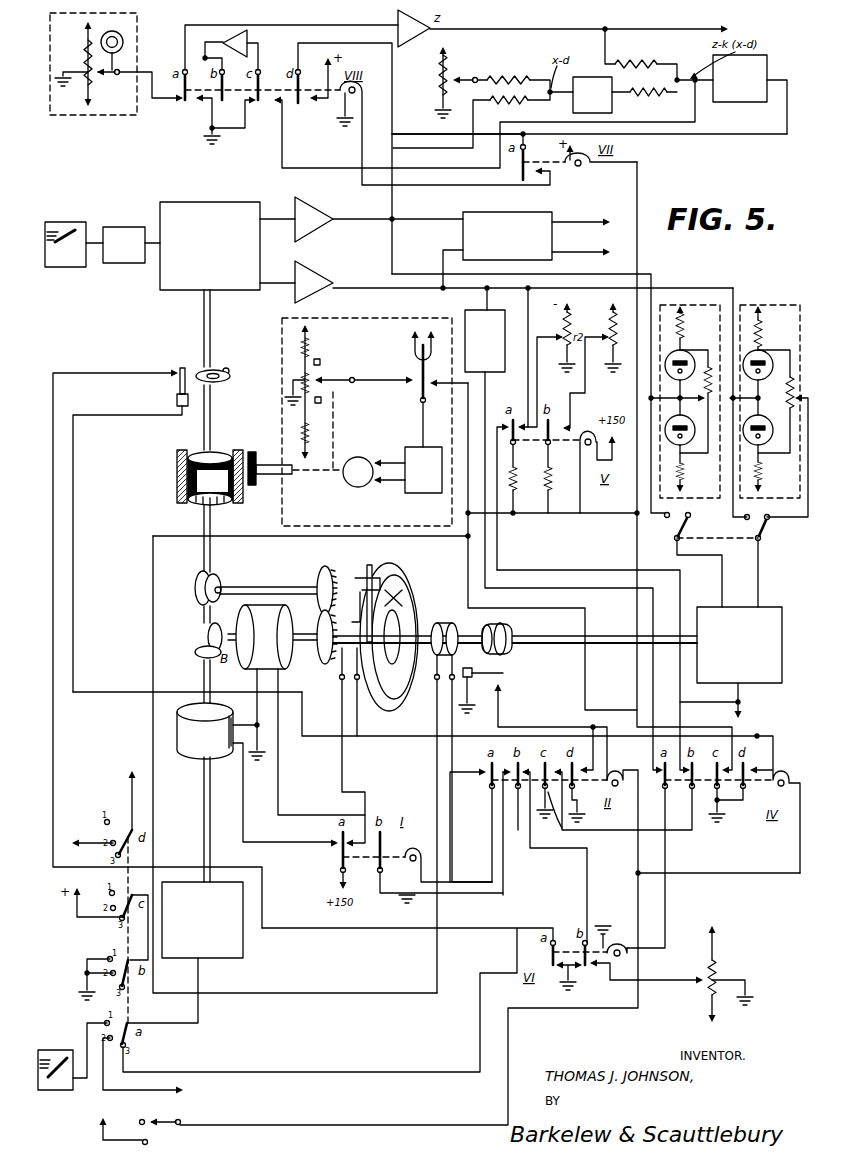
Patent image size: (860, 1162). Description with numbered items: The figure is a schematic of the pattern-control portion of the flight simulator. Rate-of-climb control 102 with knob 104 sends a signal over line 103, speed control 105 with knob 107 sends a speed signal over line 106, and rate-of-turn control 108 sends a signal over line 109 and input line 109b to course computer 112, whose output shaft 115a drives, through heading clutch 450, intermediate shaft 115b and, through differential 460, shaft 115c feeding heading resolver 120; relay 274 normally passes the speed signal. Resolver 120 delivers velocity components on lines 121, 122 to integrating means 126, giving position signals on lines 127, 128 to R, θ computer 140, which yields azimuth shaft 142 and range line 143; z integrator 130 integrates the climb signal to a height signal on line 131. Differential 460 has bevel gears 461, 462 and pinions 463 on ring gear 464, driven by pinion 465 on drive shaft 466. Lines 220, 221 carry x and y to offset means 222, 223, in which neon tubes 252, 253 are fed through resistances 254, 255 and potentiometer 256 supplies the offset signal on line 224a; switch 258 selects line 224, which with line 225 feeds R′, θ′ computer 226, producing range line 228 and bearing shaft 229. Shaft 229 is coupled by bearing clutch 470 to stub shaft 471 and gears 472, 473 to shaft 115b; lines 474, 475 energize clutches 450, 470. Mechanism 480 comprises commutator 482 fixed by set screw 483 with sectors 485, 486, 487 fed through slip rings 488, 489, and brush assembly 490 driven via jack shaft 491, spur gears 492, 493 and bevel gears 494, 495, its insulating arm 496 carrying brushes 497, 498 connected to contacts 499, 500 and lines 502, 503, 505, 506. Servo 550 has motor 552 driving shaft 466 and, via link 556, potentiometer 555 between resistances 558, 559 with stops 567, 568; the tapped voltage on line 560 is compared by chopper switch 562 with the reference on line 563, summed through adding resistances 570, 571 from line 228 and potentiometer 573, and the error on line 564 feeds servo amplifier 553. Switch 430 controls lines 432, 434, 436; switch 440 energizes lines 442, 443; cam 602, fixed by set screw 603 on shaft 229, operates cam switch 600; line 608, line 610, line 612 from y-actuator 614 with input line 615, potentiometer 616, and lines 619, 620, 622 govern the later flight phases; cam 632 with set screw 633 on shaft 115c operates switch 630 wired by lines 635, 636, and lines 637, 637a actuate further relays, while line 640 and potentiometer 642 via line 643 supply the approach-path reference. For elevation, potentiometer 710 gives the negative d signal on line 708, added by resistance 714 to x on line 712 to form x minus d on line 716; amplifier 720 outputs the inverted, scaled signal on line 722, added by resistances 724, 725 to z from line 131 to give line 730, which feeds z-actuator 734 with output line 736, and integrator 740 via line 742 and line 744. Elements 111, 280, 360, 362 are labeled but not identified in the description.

The rate-of-climb control 102 is at (118, 120).
The line 103 is at (155, 98).
The knob 104 is at (126, 36).
The speed control 105 is at (83, 218).
The line 106 is at (95, 248).
The knob 107 is at (88, 226).
The rate-of-turn control 108 is at (76, 1050).
The line 109 is at (87, 1085).
The line 109b is at (182, 1023).
The lead 111 is at (38, 1090).
The course computer 112 is at (243, 952).
The output shaft 115a is at (203, 840).
The intermediate shaft 115b is at (200, 619).
The heading shaft 115c is at (212, 330).
The heading resolver 120 is at (227, 200).
The line 121 is at (272, 217).
The line 122 is at (272, 281).
The integrating means 126 is at (330, 212).
The line 127 is at (372, 221).
The line 128 is at (370, 289).
The z integrator 130 is at (403, 44).
The line 131 is at (668, 31).
The R, θ computer 140 is at (520, 212).
The shaft 142 is at (586, 252).
The line 143 is at (590, 222).
The line 220 is at (636, 274).
The line 221 is at (566, 286).
The variable offset means 222 is at (714, 302).
The variable offset means 223 is at (788, 303).
The line 224 is at (705, 555).
The output line 224a is at (696, 530).
The line 225 is at (760, 565).
The R′, θ′ computer 226 is at (776, 606).
The line 228 is at (498, 540).
The θ′ shaft 229 is at (322, 650).
The voltage regulating neon tube 252 is at (672, 352).
The voltage regulating neon tube 253 is at (690, 440).
The resistance 254 is at (684, 332).
The resistance 255 is at (683, 470).
The potentiometer 256 is at (696, 401).
The switch 258 is at (678, 528).
The relay 274 is at (135, 227).
The lead 280 is at (146, 1090).
The lead 360 is at (89, 833).
The lead 362 is at (130, 803).
The main control switch 430 is at (144, 1041).
The line 432 is at (340, 1072).
The line 434 is at (150, 690).
The line 436 is at (435, 808).
The control switch 440 is at (164, 1130).
The line 442 is at (275, 1128).
The line 443 is at (760, 876).
The heading clutch 450 is at (204, 752).
The differential mechanism 460 is at (230, 446).
The bevel gear 461 is at (200, 506).
The bevel gear 462 is at (238, 454).
The bevel pinions 463 is at (243, 498).
The ring gear 464 is at (177, 470).
The pinion 465 is at (266, 465).
The differential drive shaft 466 is at (276, 475).
The bearing clutch 470 is at (272, 637).
The stub shaft 471 is at (269, 624).
The gear 472 is at (205, 637).
The gear 473 is at (200, 658).
The line 474 is at (292, 844).
The line 475 is at (322, 816).
The commutator mechanism 480 is at (420, 590).
The commutator 482 is at (417, 620).
The set screw 483 is at (426, 672).
The inner sector 485 is at (402, 580).
The inner sector 486 is at (377, 726).
The outer sector 487 is at (404, 598).
The slip ring 488 is at (458, 630).
The slip ring 489 is at (464, 822).
The brush assembly 490 is at (350, 560).
The jack shaft 491 is at (290, 587).
The spur gear 492 is at (330, 566).
The spur gear 493 is at (318, 628).
The bevel gear 494 is at (196, 580).
The bevel gear 495 is at (218, 596).
The radial arm 496 is at (370, 566).
The inner brush 497 is at (357, 614).
The outer brush 498 is at (356, 583).
The resilient contact 499 is at (341, 679).
The resilient contact 500 is at (355, 680).
The line 502 is at (341, 773).
The line 503 is at (485, 897).
The line 505 is at (428, 770).
The line 506 is at (458, 882).
The servo control 550 is at (393, 316).
The servo motor 552 is at (363, 457).
The servo amplifier 553 is at (394, 447).
The potentiometer 555 is at (348, 376).
The broken line 556 is at (335, 420).
The voltage dividing resistance 558 is at (312, 352).
The voltage dividing resistance 559 is at (318, 433).
The line 560 is at (374, 382).
The chopper switch 562 is at (420, 358).
The line 563 is at (448, 384).
The line 564 is at (424, 435).
The stop 567 is at (321, 361).
The stop 568 is at (322, 400).
The adding resistance 570 is at (516, 472).
The adding resistance 571 is at (551, 474).
The potentiometer 573 is at (574, 318).
The cam switch 600 is at (510, 668).
The cam 602 is at (514, 626).
The set screw 603 is at (505, 648).
The line 608 is at (587, 892).
The line 610 is at (668, 910).
The line 612 is at (488, 392).
The y-actuator 614 is at (470, 310).
The line 615 is at (492, 310).
The potentiometer 616 is at (700, 960).
The line 619 is at (550, 817).
The line 620 is at (630, 836).
The line 622 is at (468, 565).
The cam switch 630 is at (184, 366).
The cam 632 is at (230, 380).
The set screw 633 is at (228, 367).
The line 635 is at (152, 415).
The line 636 is at (53, 372).
The line 637 is at (634, 674).
The line 637a is at (638, 190).
The line 640 is at (530, 322).
The potentiometer 642 is at (630, 323).
The line 643 is at (587, 390).
The line 708 is at (478, 76).
The potentiometer 710 is at (440, 82).
The line 712 is at (473, 138).
The resistance 714 is at (522, 76).
The line 716 is at (550, 100).
The amplifier 720 is at (590, 77).
The line 722 is at (644, 101).
The resistance 724 is at (652, 96).
The resistance 725 is at (634, 62).
The line 730 is at (700, 85).
The z-actuator 734 is at (768, 70).
The output line 736 is at (757, 138).
The integrating circuit 740 is at (248, 34).
The line 742 is at (356, 168).
The line 744 is at (185, 35).